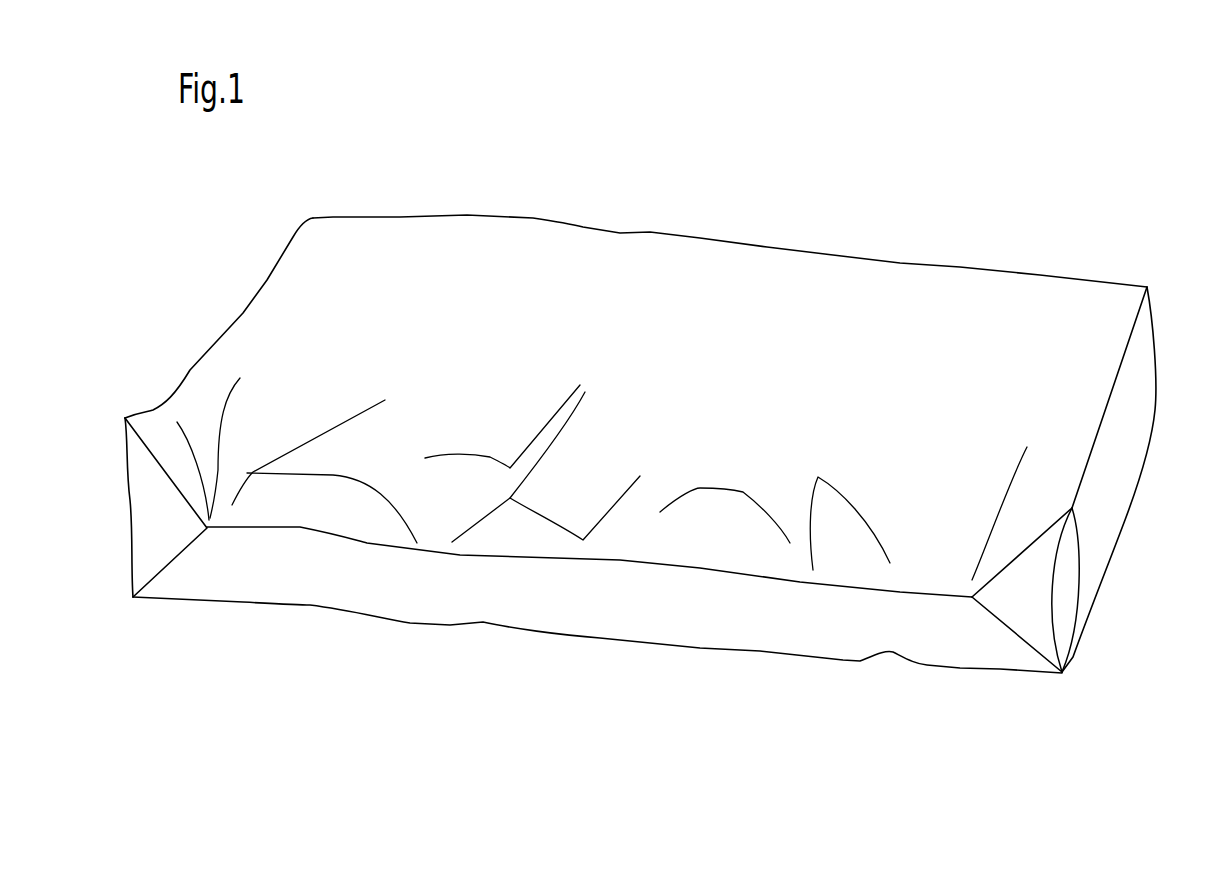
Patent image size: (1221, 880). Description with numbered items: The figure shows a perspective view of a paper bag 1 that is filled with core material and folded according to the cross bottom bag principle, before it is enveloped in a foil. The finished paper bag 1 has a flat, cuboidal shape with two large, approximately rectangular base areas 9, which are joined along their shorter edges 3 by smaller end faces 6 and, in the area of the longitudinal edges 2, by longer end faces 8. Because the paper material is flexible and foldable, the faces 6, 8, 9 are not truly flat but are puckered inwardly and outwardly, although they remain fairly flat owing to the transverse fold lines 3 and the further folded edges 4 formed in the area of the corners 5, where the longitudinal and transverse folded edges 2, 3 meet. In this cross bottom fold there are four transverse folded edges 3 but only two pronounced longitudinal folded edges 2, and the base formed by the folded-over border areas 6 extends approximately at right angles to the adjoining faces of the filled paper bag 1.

The paper bag 1 is at (842, 214).
The longitudinal edge 2 is at (655, 565).
The fold line 3 is at (1117, 370).
The further folded edge 4 is at (1000, 628).
The corner 5 is at (1147, 287).
The end face 6 is at (1110, 472).
The longer end face 8 is at (770, 612).
The base area 9 is at (960, 310).